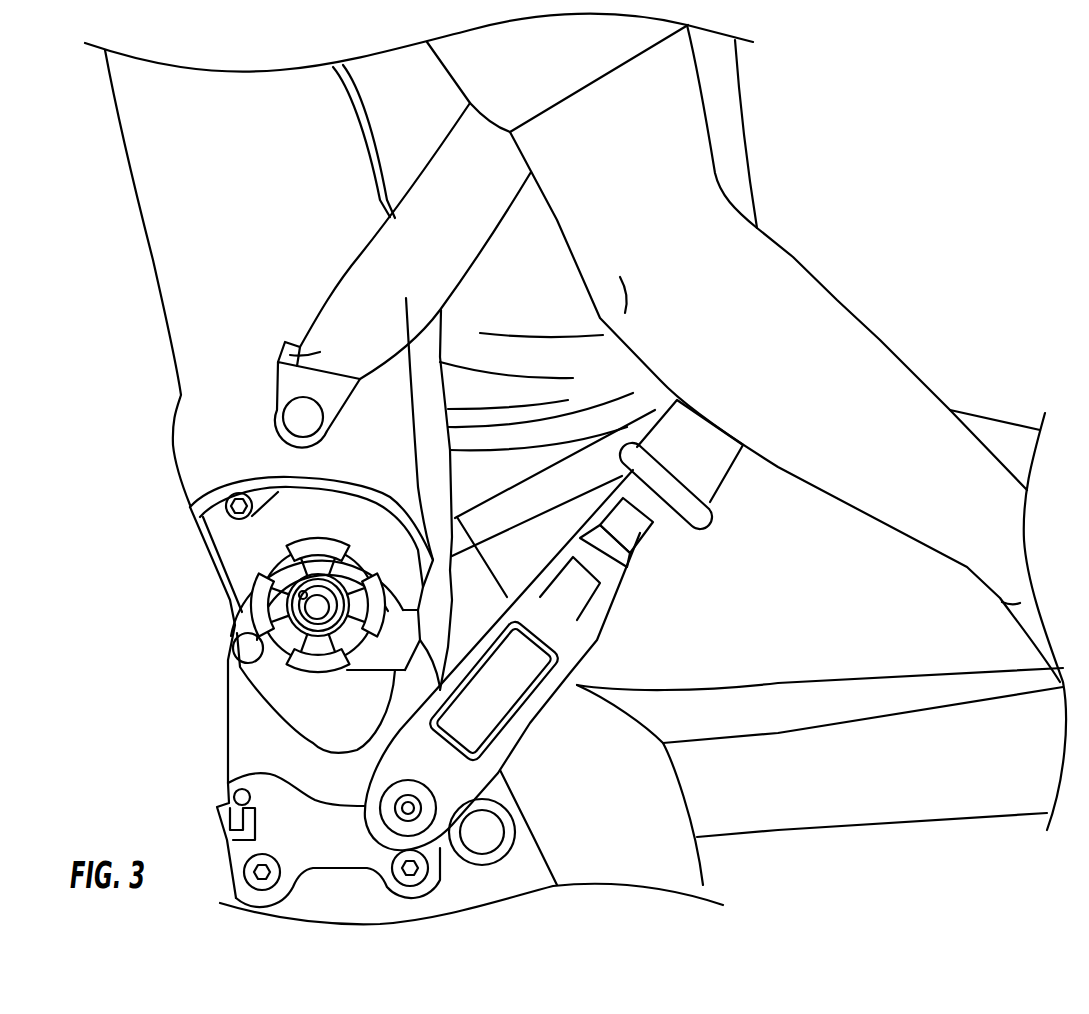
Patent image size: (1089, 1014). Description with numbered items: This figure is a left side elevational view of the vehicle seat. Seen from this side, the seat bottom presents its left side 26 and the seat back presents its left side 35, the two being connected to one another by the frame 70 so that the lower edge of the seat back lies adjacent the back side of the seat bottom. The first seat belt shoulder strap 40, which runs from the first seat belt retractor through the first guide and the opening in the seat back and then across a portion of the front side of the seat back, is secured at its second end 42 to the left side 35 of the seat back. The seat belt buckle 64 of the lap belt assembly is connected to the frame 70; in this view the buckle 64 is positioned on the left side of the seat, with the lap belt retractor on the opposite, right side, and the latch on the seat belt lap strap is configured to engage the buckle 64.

The left side 26 is at (817, 817).
The left side 35 is at (207, 315).
The first seat belt shoulder strap 40 is at (400, 233).
The second end 42 is at (277, 381).
The seat belt buckle 64 is at (635, 538).
The frame 70 is at (236, 652).